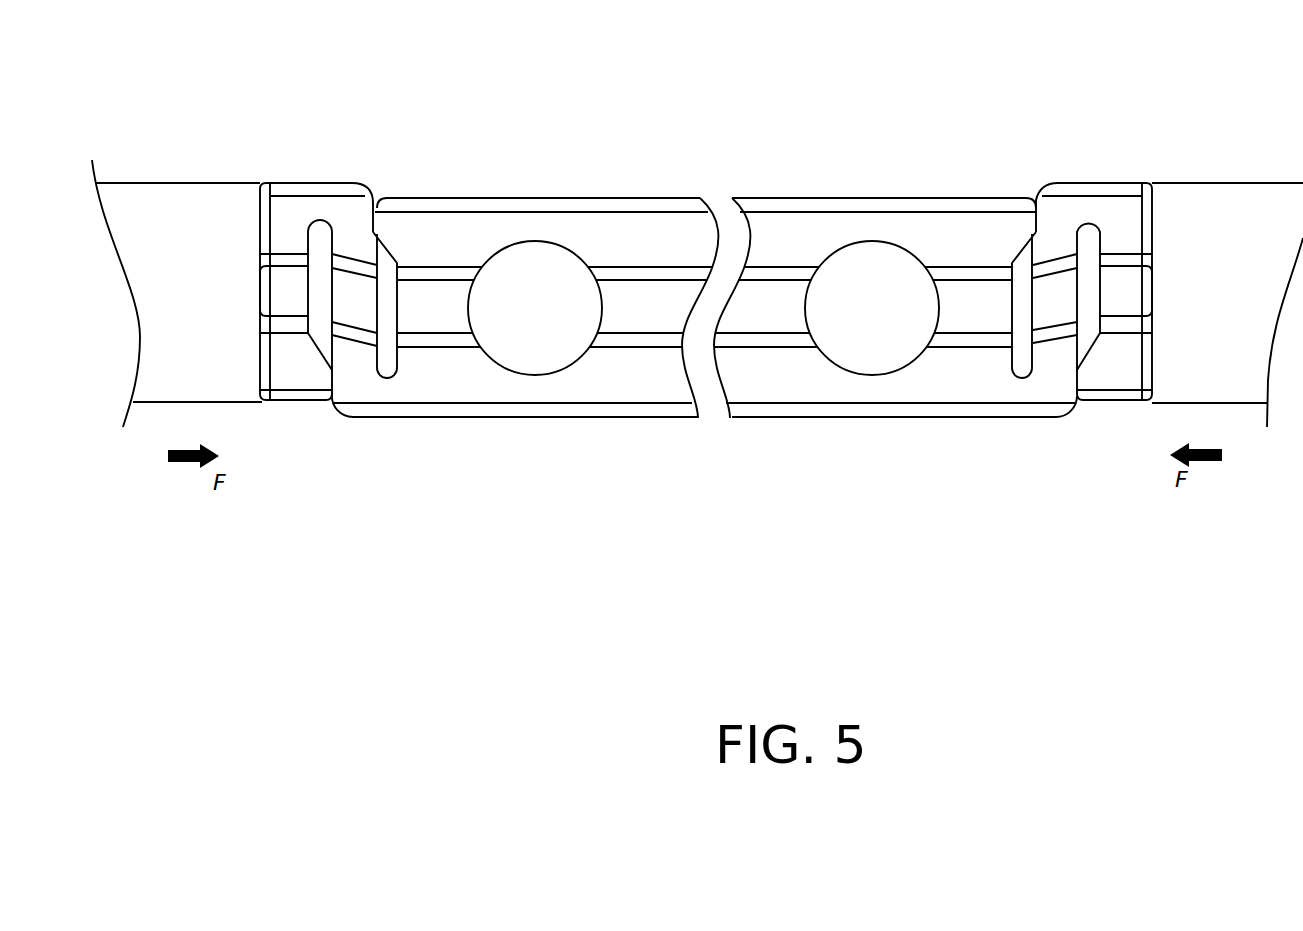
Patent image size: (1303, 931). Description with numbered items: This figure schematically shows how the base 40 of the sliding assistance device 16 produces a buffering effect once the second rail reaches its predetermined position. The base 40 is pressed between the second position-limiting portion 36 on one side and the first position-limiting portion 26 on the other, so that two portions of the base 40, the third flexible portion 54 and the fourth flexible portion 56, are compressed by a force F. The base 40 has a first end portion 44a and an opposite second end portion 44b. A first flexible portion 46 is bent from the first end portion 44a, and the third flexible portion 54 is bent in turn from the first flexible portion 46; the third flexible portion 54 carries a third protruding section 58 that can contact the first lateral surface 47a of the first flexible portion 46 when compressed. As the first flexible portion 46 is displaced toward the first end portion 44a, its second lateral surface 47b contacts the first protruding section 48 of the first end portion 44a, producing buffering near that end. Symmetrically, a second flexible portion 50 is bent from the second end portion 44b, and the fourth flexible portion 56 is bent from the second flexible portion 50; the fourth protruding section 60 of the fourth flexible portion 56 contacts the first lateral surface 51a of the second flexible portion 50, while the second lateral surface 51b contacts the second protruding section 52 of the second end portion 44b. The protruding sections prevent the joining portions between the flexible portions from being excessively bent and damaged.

The sliding assistance device 16 is at (724, 96).
The first position-limiting portion 26 is at (173, 207).
The second position-limiting portion 36 is at (1252, 200).
The base 40 is at (757, 410).
The first end portion 44a is at (403, 317).
The second end portion 44b is at (997, 307).
The first flexible portion 46 is at (350, 293).
The first lateral surface 47a is at (333, 383).
The second lateral surface 47b is at (372, 200).
The first protruding section 48 is at (387, 220).
The second flexible portion 50 is at (1062, 228).
The first lateral surface 51a is at (1075, 383).
The second lateral surface 51b is at (1032, 213).
The second protruding section 52 is at (1008, 220).
The third flexible portion 54 is at (288, 290).
The fourth flexible portion 56 is at (1118, 297).
The third protruding section 58 is at (322, 373).
The fourth protruding section 60 is at (1092, 370).